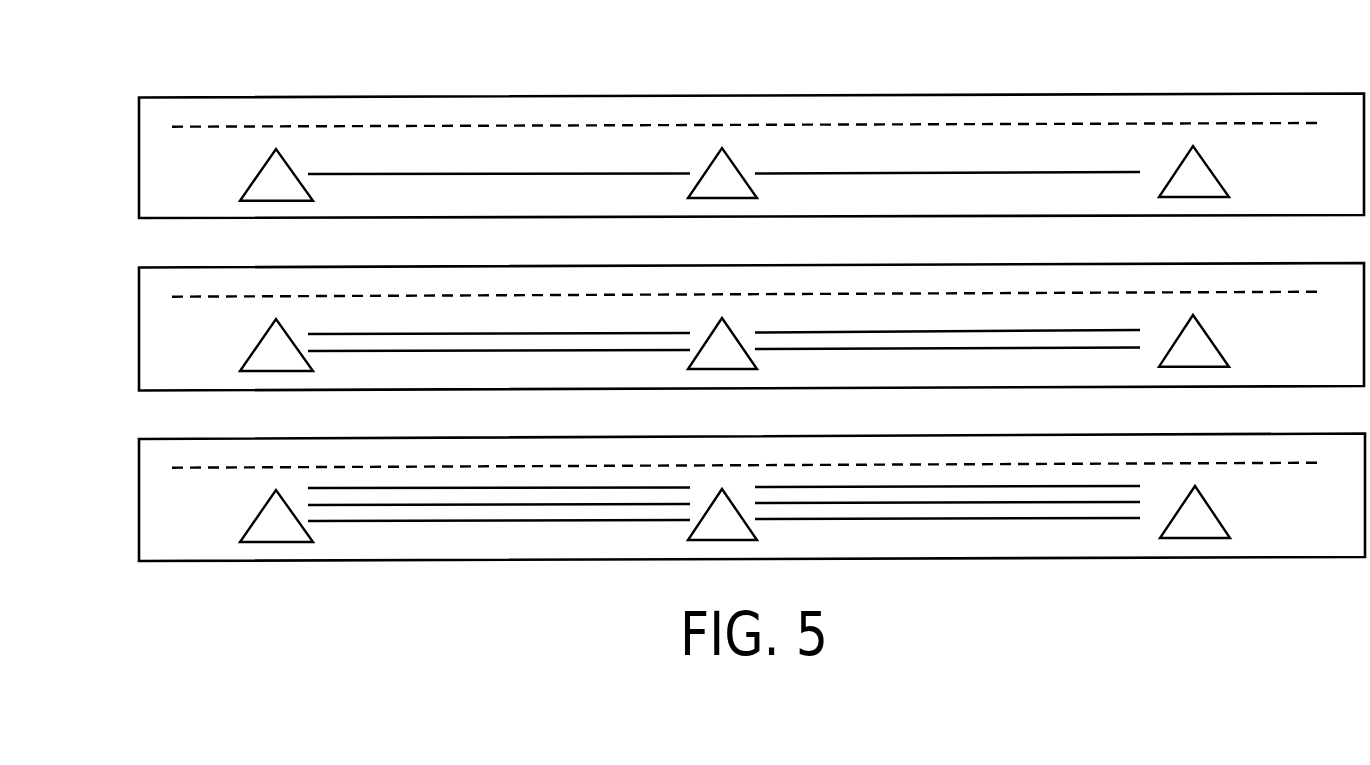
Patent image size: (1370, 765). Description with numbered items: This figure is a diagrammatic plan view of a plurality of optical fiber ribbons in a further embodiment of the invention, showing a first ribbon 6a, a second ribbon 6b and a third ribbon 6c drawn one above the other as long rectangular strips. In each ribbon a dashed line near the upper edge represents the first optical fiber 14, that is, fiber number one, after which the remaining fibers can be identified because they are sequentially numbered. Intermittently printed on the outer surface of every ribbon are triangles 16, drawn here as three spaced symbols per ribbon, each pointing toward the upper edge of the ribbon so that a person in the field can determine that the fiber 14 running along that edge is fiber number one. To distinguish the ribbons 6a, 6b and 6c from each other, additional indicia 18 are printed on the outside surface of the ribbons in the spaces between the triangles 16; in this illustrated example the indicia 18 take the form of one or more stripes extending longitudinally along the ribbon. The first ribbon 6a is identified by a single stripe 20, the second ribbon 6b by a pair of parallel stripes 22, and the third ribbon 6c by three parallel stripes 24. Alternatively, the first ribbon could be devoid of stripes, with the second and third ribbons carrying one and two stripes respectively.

The first ribbon 6a is at (153, 159).
The second ribbon 6b is at (153, 330).
The third ribbon 6c is at (153, 502).
The first optical fiber 14 is at (408, 123).
The triangles 16 is at (270, 184).
The additional indicia 18 is at (505, 173).
The single stripe 20 is at (942, 172).
The pair of parallel stripes 22 is at (928, 331).
The three parallel stripes 24 is at (906, 505).